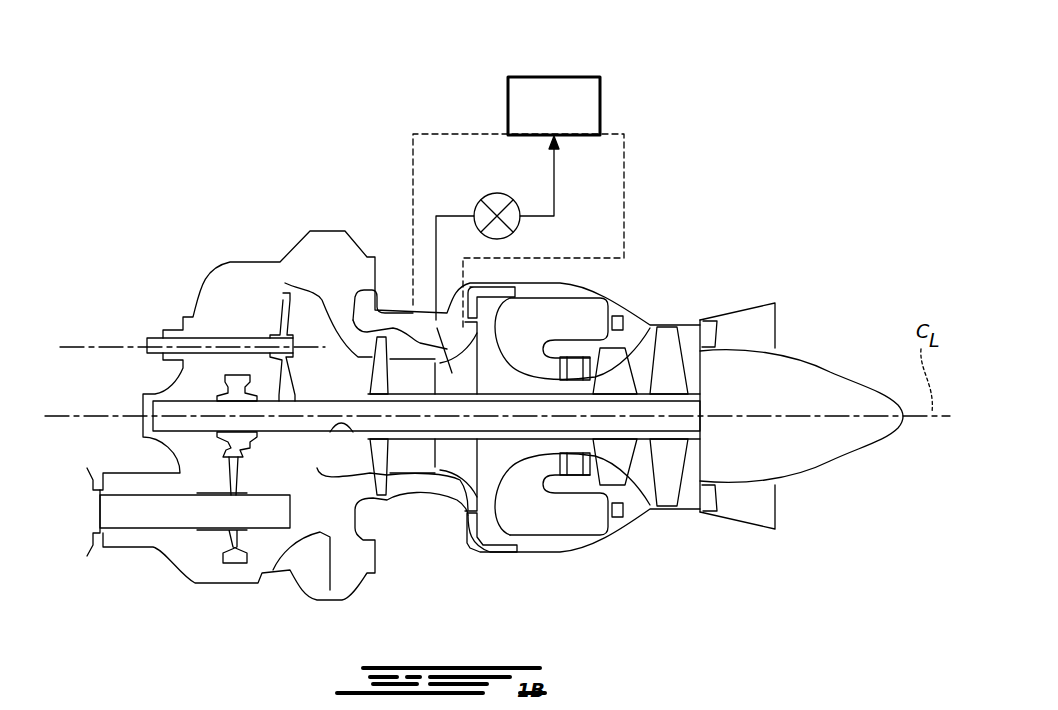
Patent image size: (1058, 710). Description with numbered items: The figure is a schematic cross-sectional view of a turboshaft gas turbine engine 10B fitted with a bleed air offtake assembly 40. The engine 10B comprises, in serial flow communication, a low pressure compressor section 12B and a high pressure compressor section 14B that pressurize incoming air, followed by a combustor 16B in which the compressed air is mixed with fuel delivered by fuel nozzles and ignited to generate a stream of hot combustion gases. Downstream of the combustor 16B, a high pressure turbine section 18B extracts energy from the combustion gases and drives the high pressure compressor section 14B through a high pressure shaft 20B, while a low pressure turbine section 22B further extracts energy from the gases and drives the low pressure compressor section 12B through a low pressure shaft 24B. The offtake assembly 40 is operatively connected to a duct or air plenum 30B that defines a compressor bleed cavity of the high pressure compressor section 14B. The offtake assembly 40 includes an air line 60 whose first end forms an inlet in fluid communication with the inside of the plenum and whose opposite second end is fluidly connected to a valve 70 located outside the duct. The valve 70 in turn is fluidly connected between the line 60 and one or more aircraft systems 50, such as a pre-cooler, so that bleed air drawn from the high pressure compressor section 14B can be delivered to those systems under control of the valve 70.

The gas turbine engine 10B is at (122, 182).
The low pressure compressor section 12B is at (380, 350).
The high pressure compressor section 14B is at (450, 372).
The combustor 16B is at (587, 315).
The high pressure turbine section 18B is at (620, 373).
The high pressure shaft 20B is at (552, 432).
The low pressure turbine section 22B is at (670, 370).
The low pressure shaft 24B is at (330, 432).
The air plenum 30B is at (477, 347).
The offtake assembly 40 is at (626, 160).
The aircraft systems 50 is at (563, 102).
The air line 60 is at (436, 263).
The valve 70 is at (480, 200).